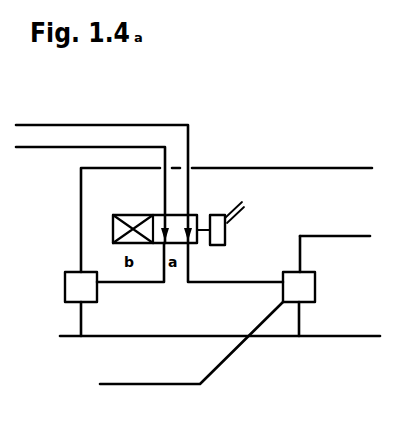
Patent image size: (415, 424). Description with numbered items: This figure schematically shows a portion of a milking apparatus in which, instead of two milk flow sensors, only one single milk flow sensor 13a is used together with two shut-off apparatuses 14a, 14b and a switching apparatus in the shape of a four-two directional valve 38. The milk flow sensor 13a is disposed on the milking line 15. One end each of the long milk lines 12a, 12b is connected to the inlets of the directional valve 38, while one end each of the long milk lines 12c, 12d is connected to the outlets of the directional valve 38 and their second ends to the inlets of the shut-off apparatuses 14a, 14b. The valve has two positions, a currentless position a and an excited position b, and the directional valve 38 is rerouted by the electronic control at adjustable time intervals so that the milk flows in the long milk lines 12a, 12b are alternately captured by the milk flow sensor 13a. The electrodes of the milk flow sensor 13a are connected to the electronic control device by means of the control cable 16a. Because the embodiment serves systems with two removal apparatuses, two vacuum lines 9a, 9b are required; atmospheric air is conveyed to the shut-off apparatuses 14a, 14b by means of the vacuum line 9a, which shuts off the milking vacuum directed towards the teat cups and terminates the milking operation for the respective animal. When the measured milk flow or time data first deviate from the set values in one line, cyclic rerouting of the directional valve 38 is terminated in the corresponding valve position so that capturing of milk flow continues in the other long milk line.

The long milk line 12a is at (38, 146).
The long milk line 12b is at (89, 125).
The long milk line 12c is at (138, 285).
The long milk line 12d is at (223, 285).
The vacuum line 9a is at (320, 168).
The vacuum line 9b is at (350, 235).
The milk flow sensor 13a is at (334, 254).
The shut-off apparatus 14a is at (305, 287).
The shut-off apparatus 14b is at (70, 293).
The milking line 15 is at (345, 334).
The control cable 16a is at (225, 362).
The 4/2 directional valve 38 is at (192, 213).